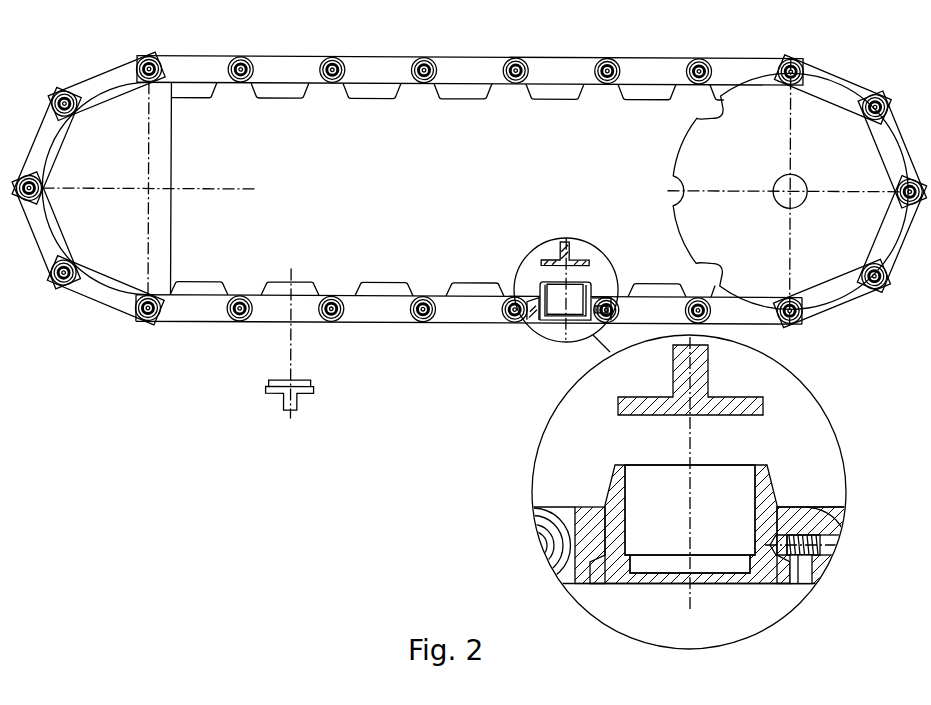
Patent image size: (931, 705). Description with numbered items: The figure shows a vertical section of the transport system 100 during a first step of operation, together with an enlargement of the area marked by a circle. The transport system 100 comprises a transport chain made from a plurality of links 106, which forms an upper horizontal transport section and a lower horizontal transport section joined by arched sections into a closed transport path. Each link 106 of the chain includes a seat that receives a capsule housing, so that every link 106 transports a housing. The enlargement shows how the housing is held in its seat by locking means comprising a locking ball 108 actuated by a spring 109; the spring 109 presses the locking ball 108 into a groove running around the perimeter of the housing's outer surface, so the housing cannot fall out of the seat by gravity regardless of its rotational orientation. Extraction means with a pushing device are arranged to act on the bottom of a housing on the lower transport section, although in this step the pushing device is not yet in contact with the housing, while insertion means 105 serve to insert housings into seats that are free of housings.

The transport system 100 is at (293, 47).
The insertion means 105 is at (303, 381).
The link 106 is at (380, 63).
The locking ball 108 is at (782, 534).
The spring 109 is at (799, 562).